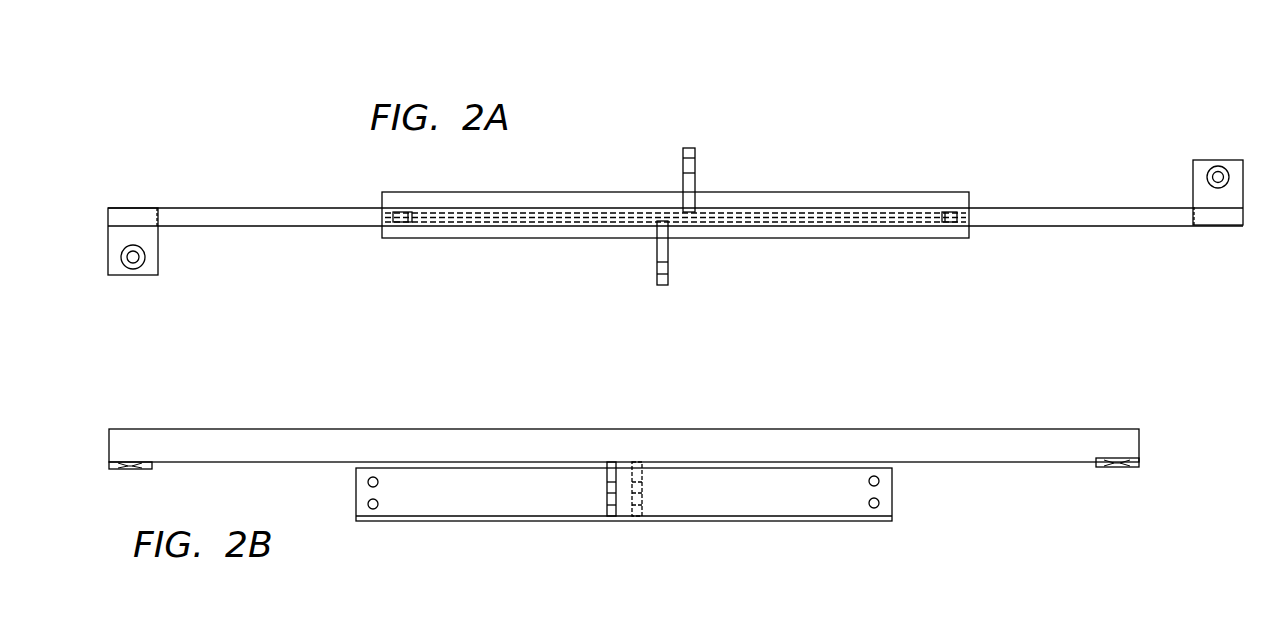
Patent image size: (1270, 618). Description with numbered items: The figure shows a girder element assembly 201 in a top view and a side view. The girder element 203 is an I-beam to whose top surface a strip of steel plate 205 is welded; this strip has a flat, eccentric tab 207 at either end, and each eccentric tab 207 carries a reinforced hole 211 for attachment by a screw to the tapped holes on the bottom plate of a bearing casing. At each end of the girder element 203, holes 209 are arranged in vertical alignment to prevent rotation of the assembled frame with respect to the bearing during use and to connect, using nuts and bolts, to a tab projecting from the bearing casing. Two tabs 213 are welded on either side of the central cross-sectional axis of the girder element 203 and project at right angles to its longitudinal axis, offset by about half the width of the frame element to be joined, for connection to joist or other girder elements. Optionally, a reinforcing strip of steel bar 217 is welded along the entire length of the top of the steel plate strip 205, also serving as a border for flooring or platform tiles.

In FIG. 2A, the girder element assembly 201 is at (788, 175).
In FIG. 2A, the girder element 203 is at (963, 197).
In FIG. 2B, the girder element 203 is at (755, 502).
In FIG. 2A, the strip of steel plate 205 is at (237, 208).
In FIG. 2B, the strip of steel plate 205 is at (1046, 464).
In FIG. 2A, the eccentric tab 207 is at (685, 197).
In FIG. 2B, the eccentric tab 207 is at (1136, 468).
In FIG. 2B, the holes 209 is at (378, 507).
In FIG. 2A, the reinforced hole 211 is at (1215, 185).
In FIG. 2A, the tabs 213 is at (697, 157).
In FIG. 2B, the tabs 213 is at (612, 462).
In FIG. 2B, the reinforcing strip of steel bar 217 is at (258, 435).